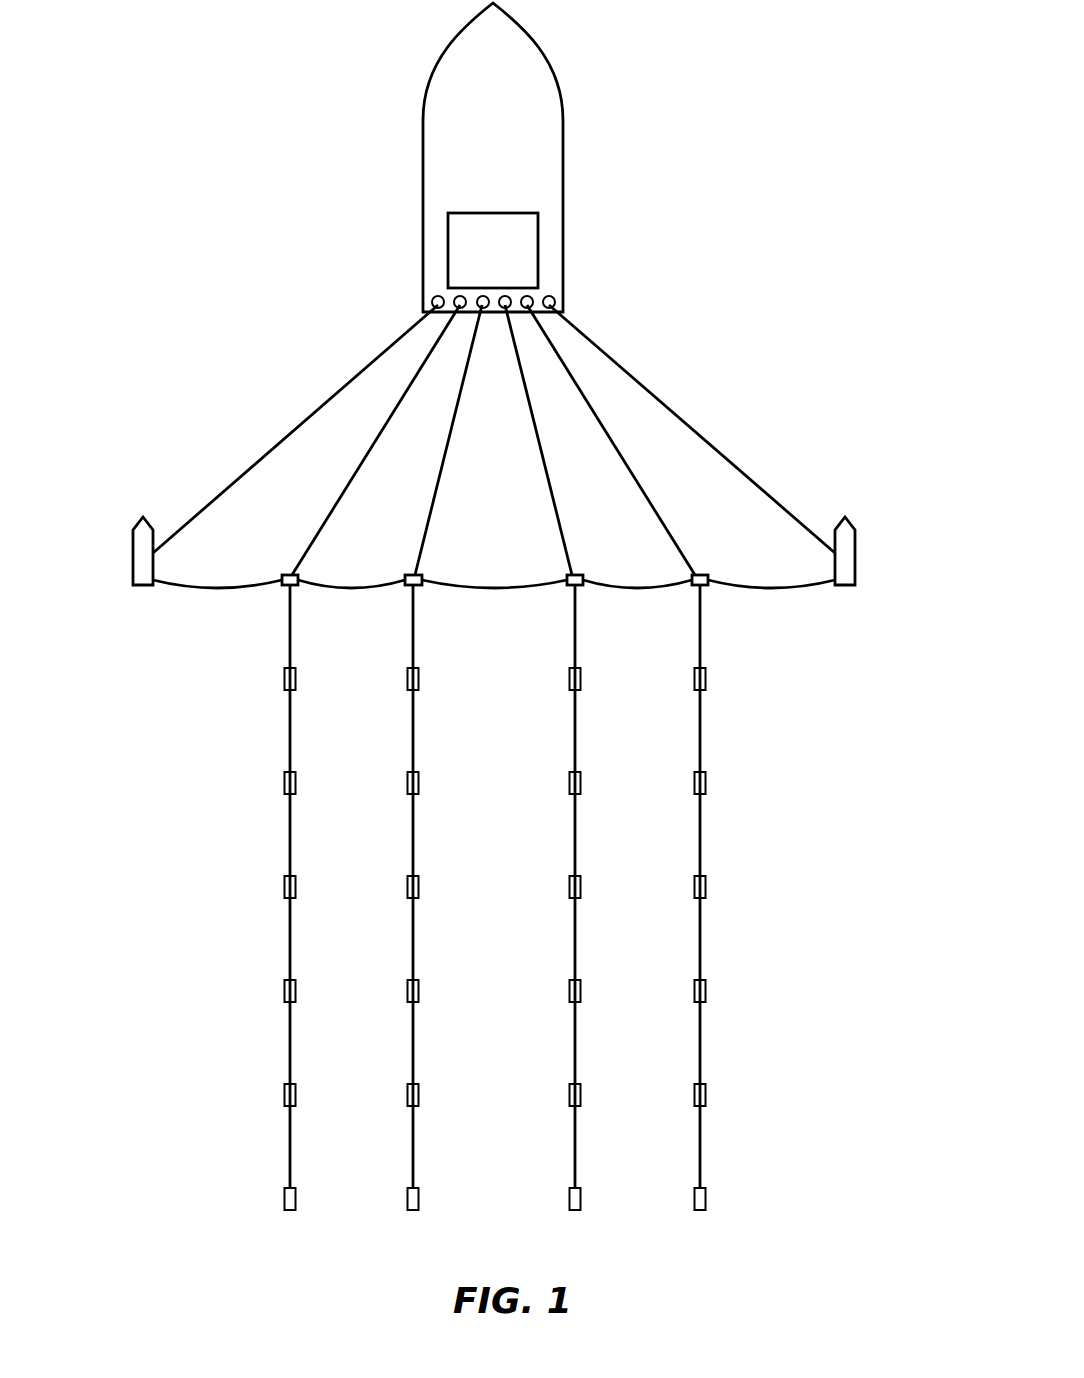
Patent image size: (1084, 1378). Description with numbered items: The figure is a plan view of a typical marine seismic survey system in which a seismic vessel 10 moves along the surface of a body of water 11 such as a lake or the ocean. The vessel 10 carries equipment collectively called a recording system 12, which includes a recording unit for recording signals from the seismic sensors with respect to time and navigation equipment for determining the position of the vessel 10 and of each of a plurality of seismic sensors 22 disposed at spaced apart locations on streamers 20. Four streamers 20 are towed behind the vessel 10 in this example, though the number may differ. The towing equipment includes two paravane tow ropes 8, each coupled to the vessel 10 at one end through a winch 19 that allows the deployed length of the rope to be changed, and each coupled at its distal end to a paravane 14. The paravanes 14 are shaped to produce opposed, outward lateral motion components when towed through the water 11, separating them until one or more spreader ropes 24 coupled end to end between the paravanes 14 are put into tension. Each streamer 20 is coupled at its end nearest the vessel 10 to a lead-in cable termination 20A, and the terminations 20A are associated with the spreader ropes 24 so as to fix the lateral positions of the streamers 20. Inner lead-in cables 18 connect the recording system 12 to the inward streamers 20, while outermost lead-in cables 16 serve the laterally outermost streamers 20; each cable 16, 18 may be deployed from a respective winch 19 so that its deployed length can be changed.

The paravane tow rope 8 is at (329, 401).
The seismic vessel 10 is at (565, 130).
The body of water 11 is at (853, 306).
The recording system 12 is at (517, 256).
The paravane 14 is at (133, 560).
The outermost lead-in cable 16 is at (350, 492).
The inner lead-in cable 18 is at (436, 492).
The winch 19 is at (505, 296).
The seismic sensor streamer 20 is at (290, 637).
The lead-in cable termination 20A is at (285, 575).
The seismic sensor 22 is at (284, 675).
The spreader rope 24 is at (190, 588).